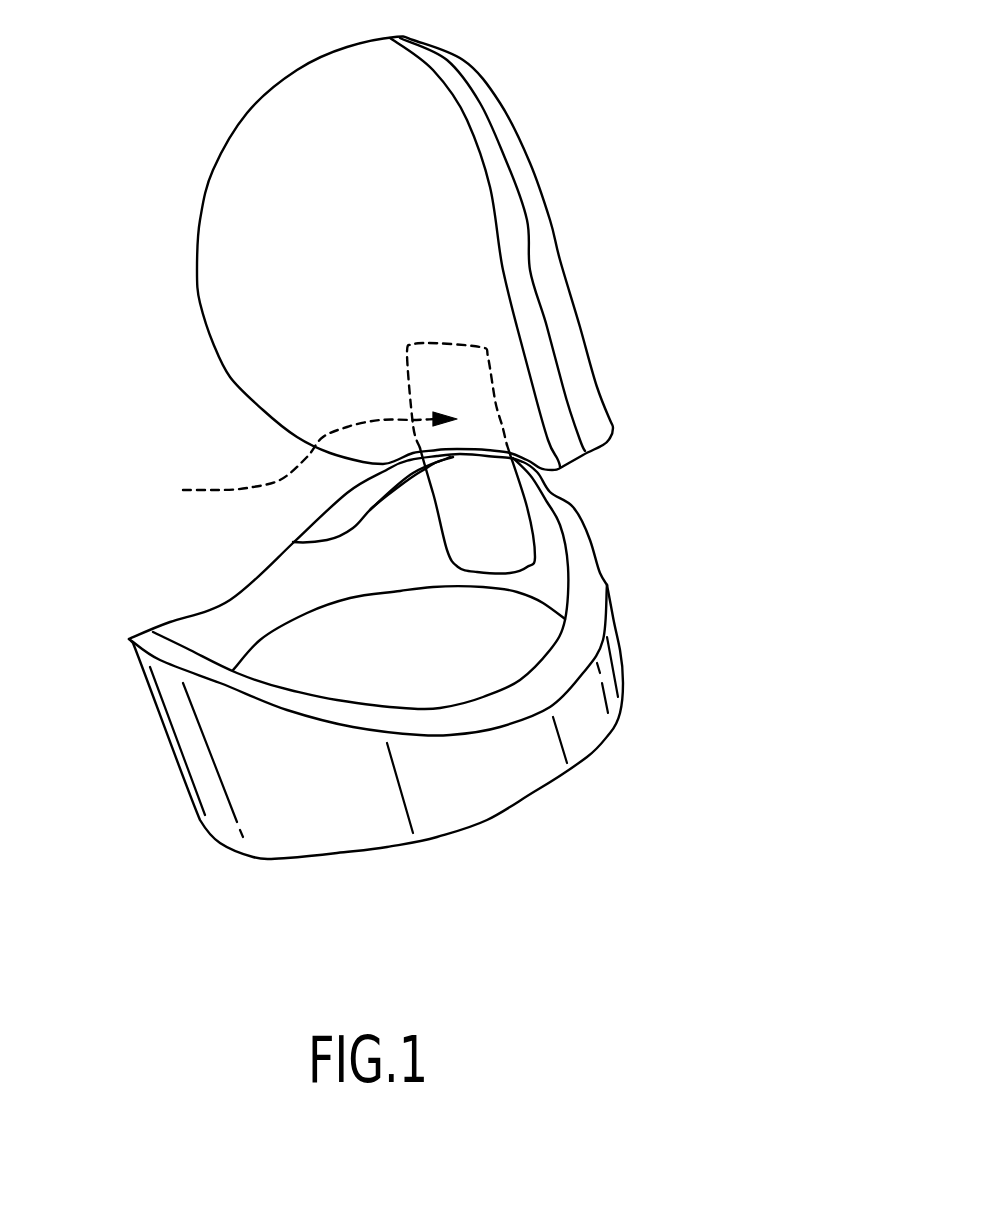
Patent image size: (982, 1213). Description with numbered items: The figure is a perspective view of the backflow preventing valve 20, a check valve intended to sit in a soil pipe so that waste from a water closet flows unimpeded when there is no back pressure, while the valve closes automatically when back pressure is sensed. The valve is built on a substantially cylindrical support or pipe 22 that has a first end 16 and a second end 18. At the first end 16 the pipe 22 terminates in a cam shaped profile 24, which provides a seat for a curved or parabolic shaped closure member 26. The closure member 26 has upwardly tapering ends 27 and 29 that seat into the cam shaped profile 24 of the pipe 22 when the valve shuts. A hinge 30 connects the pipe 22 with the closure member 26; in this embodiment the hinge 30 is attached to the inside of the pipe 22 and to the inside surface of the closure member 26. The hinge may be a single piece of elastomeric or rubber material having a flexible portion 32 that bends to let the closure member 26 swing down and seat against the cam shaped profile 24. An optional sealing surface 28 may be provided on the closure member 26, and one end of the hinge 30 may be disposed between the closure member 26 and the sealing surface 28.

The first end 16 is at (307, 717).
The second end 18 is at (463, 817).
The backflow preventing valve 20 is at (710, 311).
The cylindrical support or pipe 22 is at (617, 664).
The cam shaped profile 24 is at (590, 583).
The closure member 26 is at (540, 208).
The upwardly tapering end 27 is at (525, 302).
The sealing surface 28 is at (357, 252).
The upwardly tapering end 29 is at (210, 342).
The hinge 30 is at (296, 465).
The flexible portion 32 is at (293, 542).